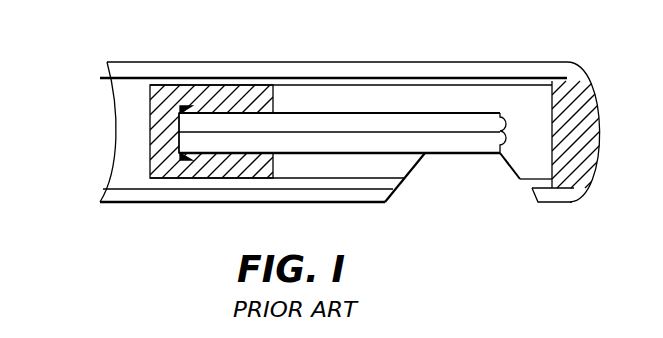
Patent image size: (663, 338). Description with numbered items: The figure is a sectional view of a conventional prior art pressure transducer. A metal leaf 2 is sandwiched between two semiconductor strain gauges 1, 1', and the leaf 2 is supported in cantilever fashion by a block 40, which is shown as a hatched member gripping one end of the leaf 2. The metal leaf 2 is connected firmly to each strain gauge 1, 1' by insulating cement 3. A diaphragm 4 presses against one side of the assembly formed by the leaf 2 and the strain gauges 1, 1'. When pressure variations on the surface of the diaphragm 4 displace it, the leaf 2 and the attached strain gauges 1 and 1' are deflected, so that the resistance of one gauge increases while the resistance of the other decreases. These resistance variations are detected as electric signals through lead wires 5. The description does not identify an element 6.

The semiconductor strain gauge 1 is at (350, 132).
The semiconductor strain gauge 1' is at (262, 186).
The metal leaf 2 is at (368, 125).
The insulating cement 3 is at (448, 134).
The diaphragm 4 is at (468, 153).
The lead wires 5 is at (188, 99).
The block 40 is at (233, 100).
The right end wall 6 is at (566, 141).